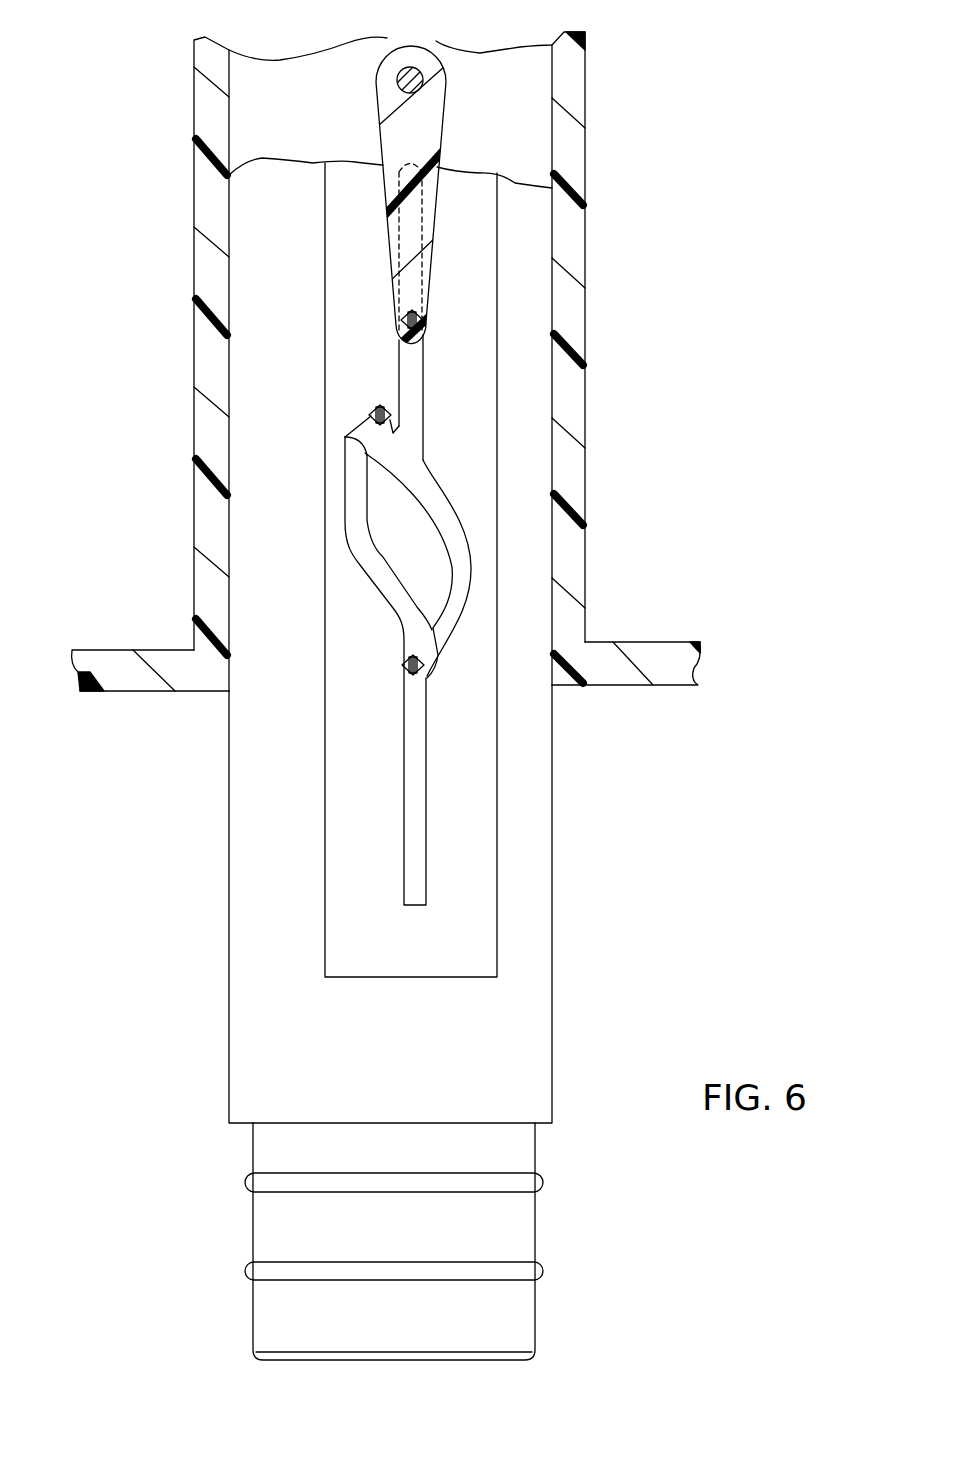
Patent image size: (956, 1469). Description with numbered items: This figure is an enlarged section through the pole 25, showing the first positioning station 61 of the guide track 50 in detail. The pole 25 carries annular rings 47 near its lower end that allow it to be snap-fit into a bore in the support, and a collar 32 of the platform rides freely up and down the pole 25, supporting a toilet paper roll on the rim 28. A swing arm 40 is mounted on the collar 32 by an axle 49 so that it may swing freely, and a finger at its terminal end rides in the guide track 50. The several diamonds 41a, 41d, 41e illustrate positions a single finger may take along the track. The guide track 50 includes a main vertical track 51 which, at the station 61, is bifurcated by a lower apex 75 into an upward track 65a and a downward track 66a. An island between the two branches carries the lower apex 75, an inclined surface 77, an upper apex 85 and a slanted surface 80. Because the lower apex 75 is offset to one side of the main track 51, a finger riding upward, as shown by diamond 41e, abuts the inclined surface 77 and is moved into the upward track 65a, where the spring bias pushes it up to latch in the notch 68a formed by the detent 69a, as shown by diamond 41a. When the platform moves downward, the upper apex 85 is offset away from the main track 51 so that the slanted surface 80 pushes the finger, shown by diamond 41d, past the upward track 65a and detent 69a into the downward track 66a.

The pole 25 is at (257, 839).
The rim 28 is at (612, 687).
The collar 32 is at (200, 177).
The swing arm 40 is at (397, 138).
The finger 41a is at (372, 410).
The finger 41d is at (425, 318).
The finger 41e is at (404, 664).
The annular rings 47 is at (265, 1182).
The axle 49 is at (401, 80).
The guide track 50 is at (413, 833).
The main vertical track 51 is at (425, 412).
The first positioning station 61 is at (345, 551).
The upward track 65a is at (368, 548).
The downward track 66a is at (462, 555).
The notch 68a is at (381, 405).
The detent 69a is at (402, 424).
The lower apex 75 is at (438, 655).
The inclined surface 77 is at (398, 572).
The slanted surface 80 is at (430, 506).
The upper apex 85 is at (345, 437).